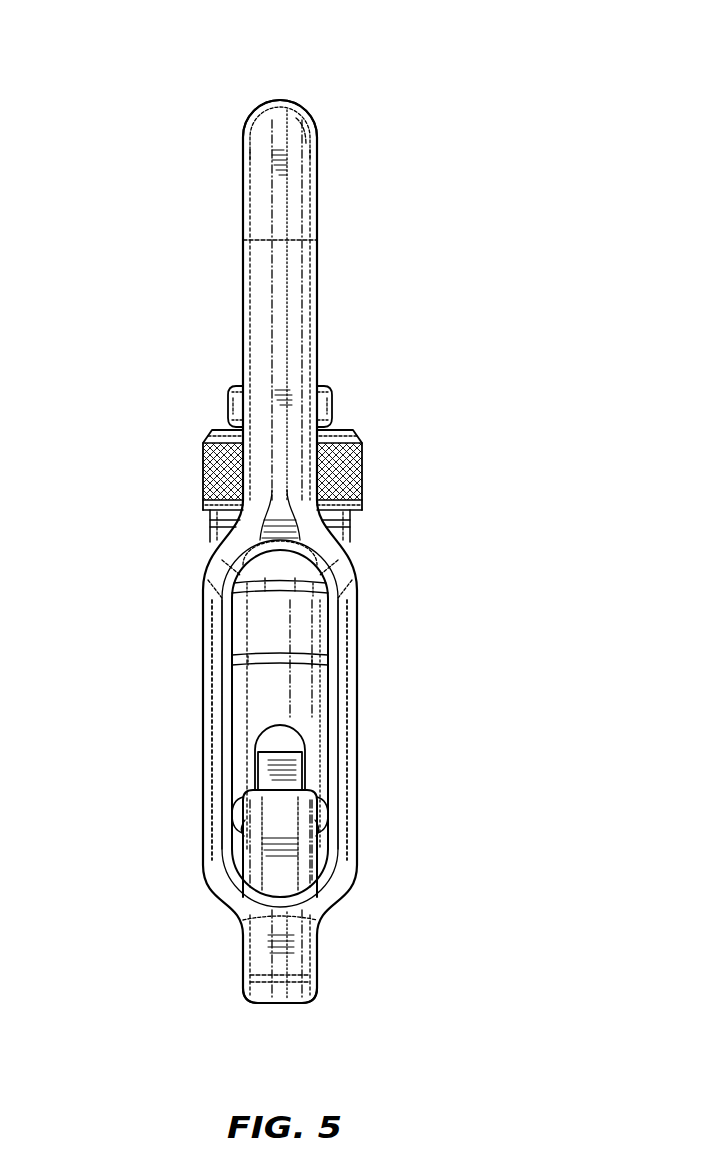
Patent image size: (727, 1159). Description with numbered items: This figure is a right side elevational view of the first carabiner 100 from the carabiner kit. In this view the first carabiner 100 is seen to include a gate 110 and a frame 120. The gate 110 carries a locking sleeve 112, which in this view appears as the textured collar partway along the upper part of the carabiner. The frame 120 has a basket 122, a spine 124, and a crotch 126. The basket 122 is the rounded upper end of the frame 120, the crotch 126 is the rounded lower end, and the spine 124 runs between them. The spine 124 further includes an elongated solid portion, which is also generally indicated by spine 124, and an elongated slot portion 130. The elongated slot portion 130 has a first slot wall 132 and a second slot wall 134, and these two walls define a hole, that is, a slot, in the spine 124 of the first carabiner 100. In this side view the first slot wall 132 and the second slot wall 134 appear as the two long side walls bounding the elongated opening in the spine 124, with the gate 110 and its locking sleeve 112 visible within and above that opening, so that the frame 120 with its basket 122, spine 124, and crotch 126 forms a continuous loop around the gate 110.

The first carabiner 100 is at (160, 80).
The frame 120 is at (281, 101).
The basket 122 is at (295, 146).
The spine 124 is at (293, 424).
The locking sleeve 112 is at (200, 482).
The elongated slot portion 130 is at (372, 727).
The first slot wall 132 is at (210, 852).
The second slot wall 134 is at (343, 830).
The gate 110 is at (262, 694).
The crotch 126 is at (302, 955).